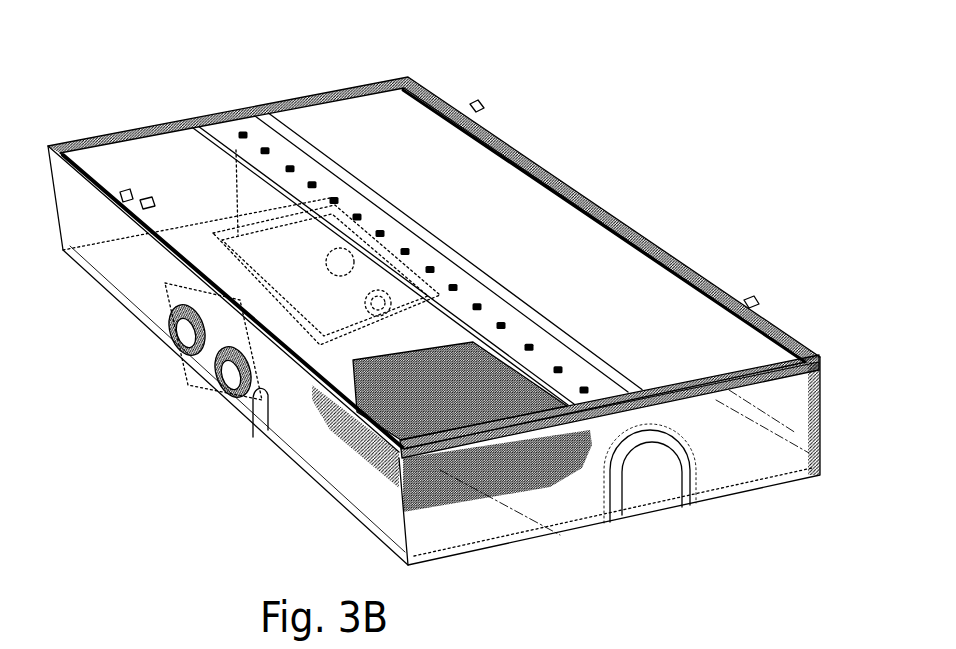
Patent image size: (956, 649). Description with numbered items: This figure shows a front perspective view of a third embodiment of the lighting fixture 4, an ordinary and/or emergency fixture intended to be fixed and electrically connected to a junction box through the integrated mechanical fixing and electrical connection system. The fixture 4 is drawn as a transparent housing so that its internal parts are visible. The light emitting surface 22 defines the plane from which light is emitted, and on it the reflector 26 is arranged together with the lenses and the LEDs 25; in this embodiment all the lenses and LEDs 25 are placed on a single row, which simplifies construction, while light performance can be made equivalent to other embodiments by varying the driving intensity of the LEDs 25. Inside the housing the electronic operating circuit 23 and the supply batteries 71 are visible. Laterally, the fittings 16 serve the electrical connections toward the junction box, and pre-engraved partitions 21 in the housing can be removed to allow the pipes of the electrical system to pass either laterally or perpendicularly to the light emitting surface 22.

The lighting fixture 4 is at (173, 108).
The light emitting surface 22 is at (348, 123).
The reflector 26 is at (360, 183).
The LEDs 25 is at (430, 270).
The supply batteries 71 is at (290, 257).
The fittings 16 is at (242, 385).
The partitions 21 is at (248, 417).
The electronic operating circuit 23 is at (467, 480).